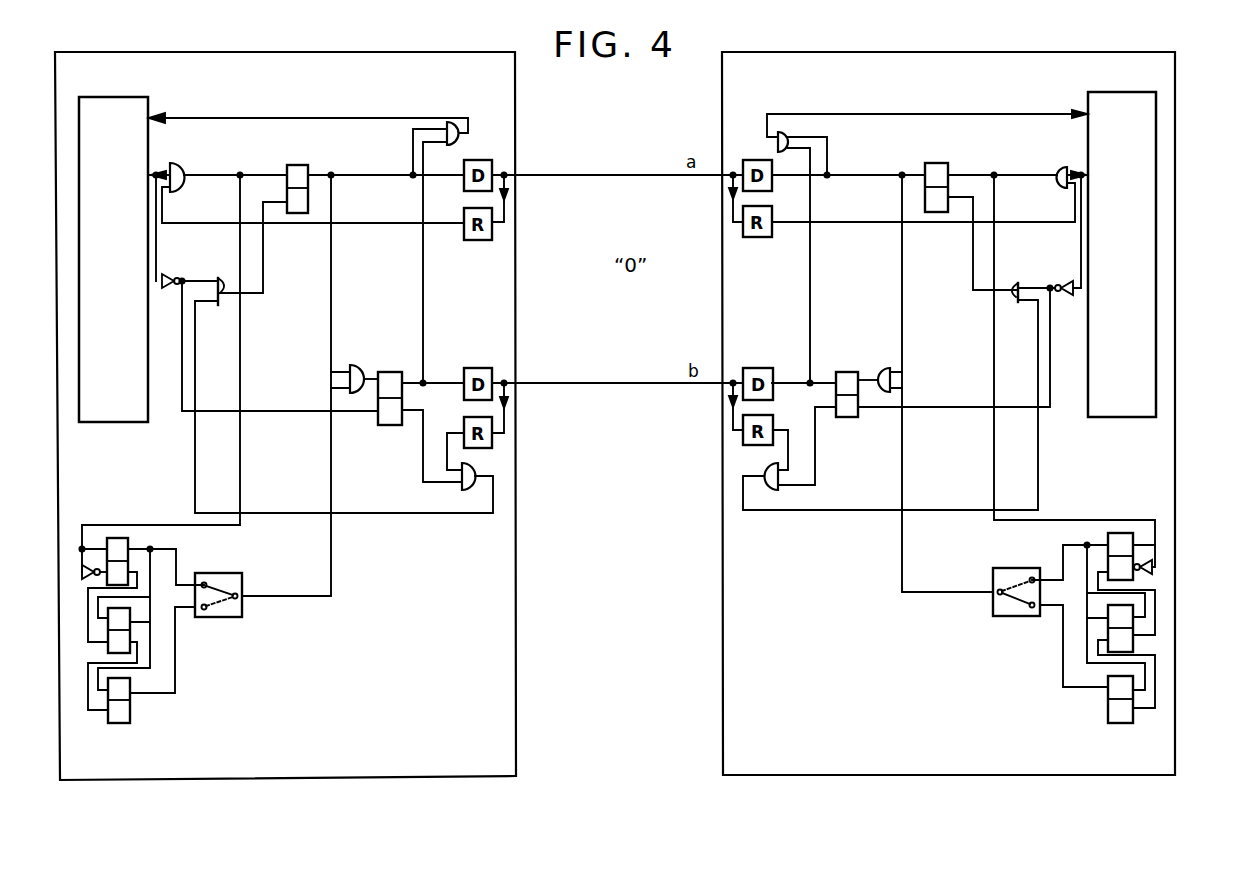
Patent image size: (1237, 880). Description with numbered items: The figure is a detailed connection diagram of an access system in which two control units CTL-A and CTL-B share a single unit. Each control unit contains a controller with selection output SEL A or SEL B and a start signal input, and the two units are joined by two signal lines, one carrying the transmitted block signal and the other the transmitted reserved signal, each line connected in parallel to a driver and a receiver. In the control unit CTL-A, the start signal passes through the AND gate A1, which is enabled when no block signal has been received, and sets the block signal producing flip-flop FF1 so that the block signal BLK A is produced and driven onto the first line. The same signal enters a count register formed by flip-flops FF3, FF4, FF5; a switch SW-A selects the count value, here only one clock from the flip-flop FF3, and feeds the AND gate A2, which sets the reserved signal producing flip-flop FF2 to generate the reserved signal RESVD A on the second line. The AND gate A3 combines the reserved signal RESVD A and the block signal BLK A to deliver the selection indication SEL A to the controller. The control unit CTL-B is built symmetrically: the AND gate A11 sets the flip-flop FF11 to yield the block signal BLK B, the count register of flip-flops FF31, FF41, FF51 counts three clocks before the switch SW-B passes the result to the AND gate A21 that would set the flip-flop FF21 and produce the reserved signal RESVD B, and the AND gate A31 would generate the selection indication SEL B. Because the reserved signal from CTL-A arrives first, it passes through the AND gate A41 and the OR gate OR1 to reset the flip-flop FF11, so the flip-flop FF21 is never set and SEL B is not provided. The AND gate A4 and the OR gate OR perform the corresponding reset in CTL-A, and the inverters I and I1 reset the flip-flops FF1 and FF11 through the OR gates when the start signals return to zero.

The control unit CTL-A is at (285, 416).
The control unit CTL-B is at (948, 413).
The selection output SEL A is at (113, 259).
The selection output SEL B is at (1122, 254).
The AND gate A1 is at (190, 163).
The AND gate A2 is at (360, 361).
The AND gate A3 is at (457, 140).
The AND gate A4 is at (470, 467).
The block signal producing flip-flop FF1 is at (296, 161).
The reserved signal producing flip-flop FF2 is at (390, 380).
The flip-flop FF3 is at (118, 548).
The flip-flop FF4 is at (130, 615).
The flip-flop FF5 is at (130, 684).
The OR gate OR is at (344, 387).
The inverter I is at (170, 278).
The switch SW-A is at (244, 565).
The block signal BLK A is at (308, 377).
The reserved signal RESVD A is at (442, 382).
The AND gate A11 is at (1054, 181).
The AND gate A21 is at (885, 366).
The AND gate A31 is at (776, 147).
The AND gate A41 is at (766, 473).
The block signal producing flip-flop FF11 is at (937, 161).
The reserved signal producing flip-flop FF21 is at (848, 364).
The flip-flop FF31 is at (1120, 537).
The flip-flop FF41 is at (1108, 607).
The flip-flop FF51 is at (1108, 690).
The OR gate OR1 is at (1015, 285).
The inverter I1 is at (1067, 282).
The switch SW-B is at (993, 576).
The block signal BLK B is at (925, 374).
The reserved signal RESVD B is at (792, 378).